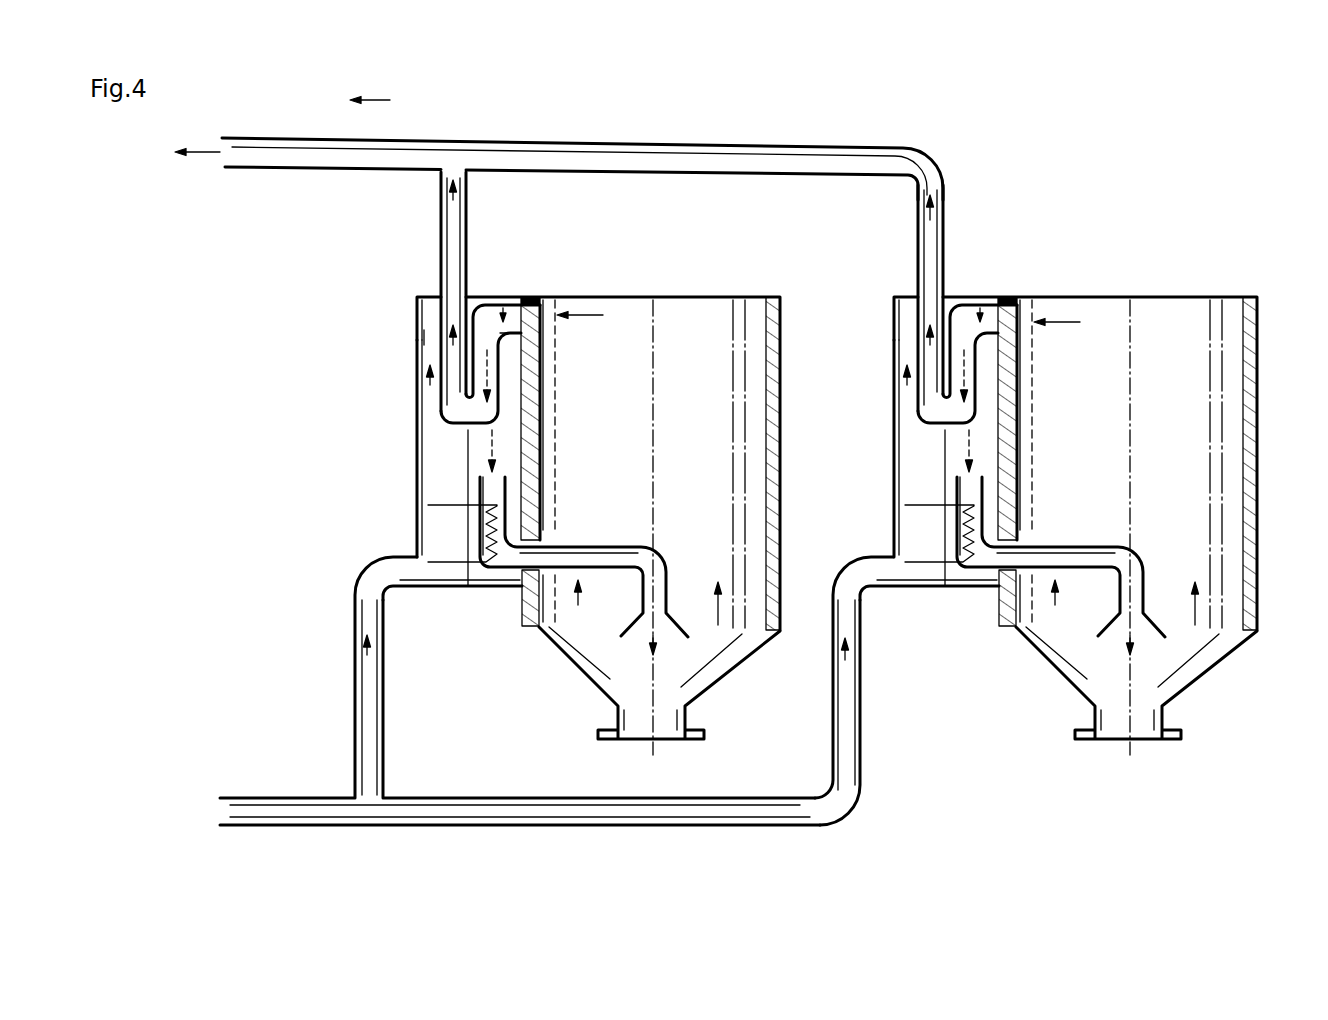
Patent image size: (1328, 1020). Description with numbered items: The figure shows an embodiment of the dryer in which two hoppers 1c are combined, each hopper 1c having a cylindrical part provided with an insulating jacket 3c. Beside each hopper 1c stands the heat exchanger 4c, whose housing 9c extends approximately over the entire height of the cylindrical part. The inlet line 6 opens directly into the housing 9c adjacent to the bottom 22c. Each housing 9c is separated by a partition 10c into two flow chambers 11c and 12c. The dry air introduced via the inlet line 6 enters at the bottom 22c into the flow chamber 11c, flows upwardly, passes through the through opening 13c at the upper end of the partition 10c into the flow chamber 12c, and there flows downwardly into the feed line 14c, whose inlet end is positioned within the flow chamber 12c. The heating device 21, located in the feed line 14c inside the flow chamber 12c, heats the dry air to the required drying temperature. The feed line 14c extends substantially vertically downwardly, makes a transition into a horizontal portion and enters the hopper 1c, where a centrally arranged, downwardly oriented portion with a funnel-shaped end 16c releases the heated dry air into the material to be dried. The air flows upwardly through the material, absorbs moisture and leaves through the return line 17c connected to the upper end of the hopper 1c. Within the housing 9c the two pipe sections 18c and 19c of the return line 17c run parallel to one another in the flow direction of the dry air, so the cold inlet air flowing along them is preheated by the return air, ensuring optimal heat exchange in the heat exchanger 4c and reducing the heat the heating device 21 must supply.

The hopper 1c is at (680, 325).
The insulating jacket 3c is at (541, 444).
The heat exchanger 4c is at (430, 403).
The inlet line 6 is at (362, 722).
The housing 9c is at (420, 455).
The partition 10c is at (453, 452).
The flow chamber 11c is at (427, 315).
The flow chamber 12c is at (511, 357).
The through opening 13c is at (470, 302).
The feed line 14c is at (565, 555).
The funnel-shaped end 16c is at (627, 620).
The return line 17c is at (512, 296).
The pipe section 18c is at (493, 403).
The pipe section 19c is at (441, 357).
The heating device 21 is at (485, 510).
The bottom 22c is at (447, 590).